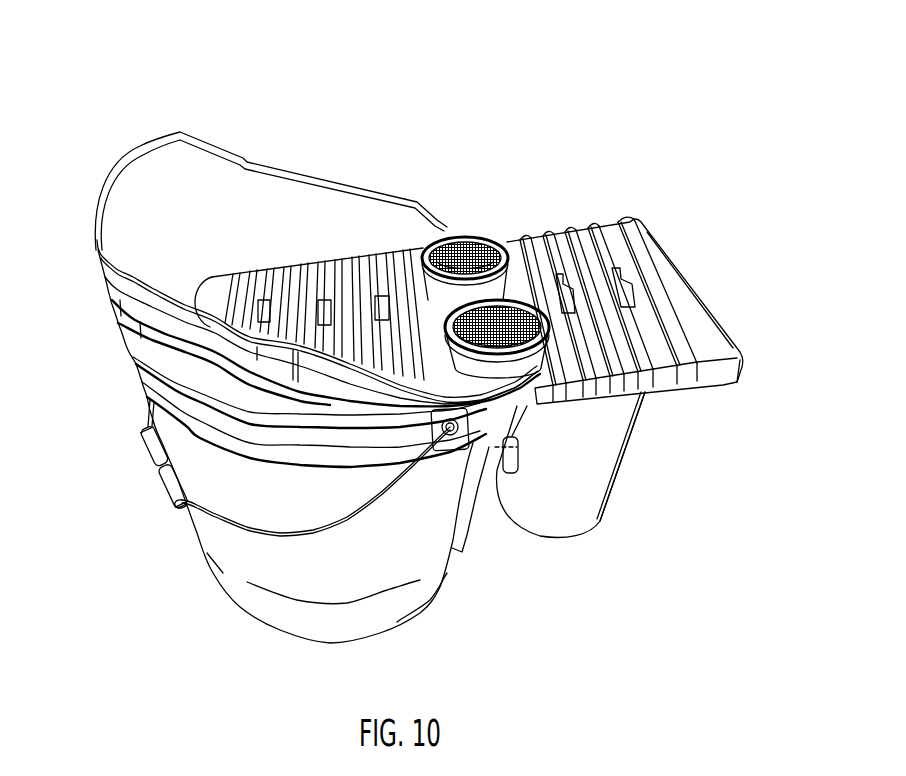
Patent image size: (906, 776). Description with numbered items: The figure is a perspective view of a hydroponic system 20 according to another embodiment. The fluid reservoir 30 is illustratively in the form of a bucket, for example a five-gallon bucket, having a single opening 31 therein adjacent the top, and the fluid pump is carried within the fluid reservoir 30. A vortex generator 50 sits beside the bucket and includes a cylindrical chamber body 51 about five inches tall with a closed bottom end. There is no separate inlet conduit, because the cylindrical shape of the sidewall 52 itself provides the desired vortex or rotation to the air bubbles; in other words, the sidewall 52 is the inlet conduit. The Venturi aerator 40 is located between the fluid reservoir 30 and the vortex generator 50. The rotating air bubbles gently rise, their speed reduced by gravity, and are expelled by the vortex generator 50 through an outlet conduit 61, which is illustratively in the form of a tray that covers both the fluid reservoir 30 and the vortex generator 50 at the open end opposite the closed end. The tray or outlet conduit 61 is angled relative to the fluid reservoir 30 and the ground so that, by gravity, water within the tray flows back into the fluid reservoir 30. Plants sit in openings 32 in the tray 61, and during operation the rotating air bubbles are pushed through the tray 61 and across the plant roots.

The bucket assembly 20 is at (88, 116).
The fluid reservoir 30 is at (157, 138).
The opening 31 is at (260, 250).
The openings 32 is at (505, 333).
The outlet conduit 61 is at (598, 217).
The Venturi aerator 40 is at (580, 513).
The vortex generator 50 is at (500, 456).
The chamber body 51 is at (603, 447).
The sidewall 52 is at (643, 420).